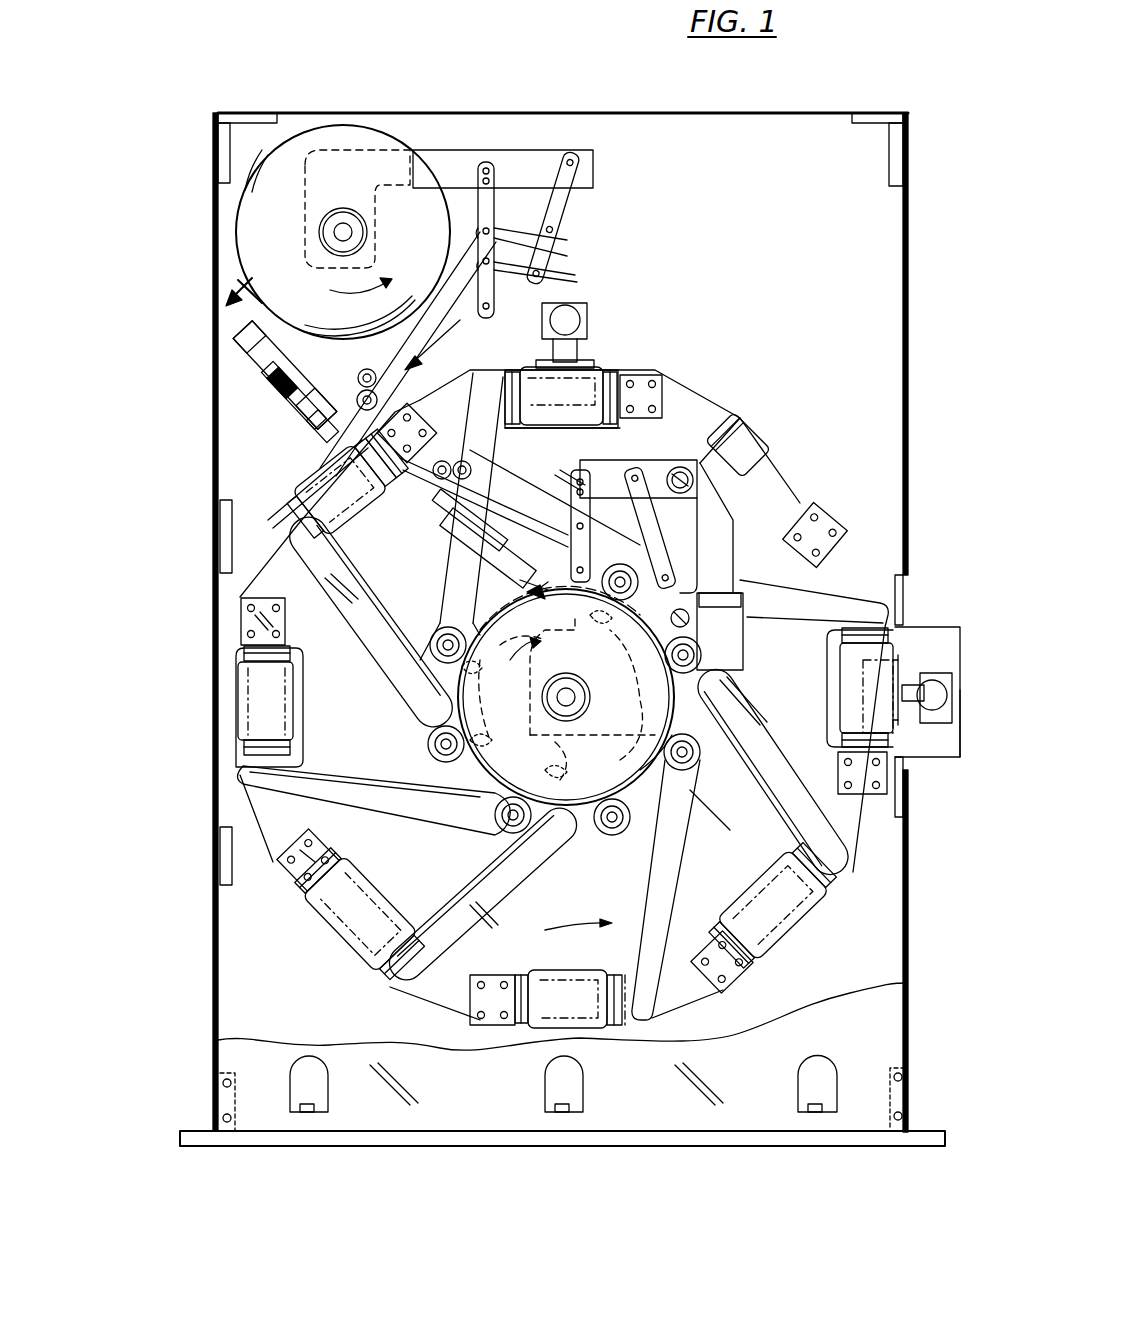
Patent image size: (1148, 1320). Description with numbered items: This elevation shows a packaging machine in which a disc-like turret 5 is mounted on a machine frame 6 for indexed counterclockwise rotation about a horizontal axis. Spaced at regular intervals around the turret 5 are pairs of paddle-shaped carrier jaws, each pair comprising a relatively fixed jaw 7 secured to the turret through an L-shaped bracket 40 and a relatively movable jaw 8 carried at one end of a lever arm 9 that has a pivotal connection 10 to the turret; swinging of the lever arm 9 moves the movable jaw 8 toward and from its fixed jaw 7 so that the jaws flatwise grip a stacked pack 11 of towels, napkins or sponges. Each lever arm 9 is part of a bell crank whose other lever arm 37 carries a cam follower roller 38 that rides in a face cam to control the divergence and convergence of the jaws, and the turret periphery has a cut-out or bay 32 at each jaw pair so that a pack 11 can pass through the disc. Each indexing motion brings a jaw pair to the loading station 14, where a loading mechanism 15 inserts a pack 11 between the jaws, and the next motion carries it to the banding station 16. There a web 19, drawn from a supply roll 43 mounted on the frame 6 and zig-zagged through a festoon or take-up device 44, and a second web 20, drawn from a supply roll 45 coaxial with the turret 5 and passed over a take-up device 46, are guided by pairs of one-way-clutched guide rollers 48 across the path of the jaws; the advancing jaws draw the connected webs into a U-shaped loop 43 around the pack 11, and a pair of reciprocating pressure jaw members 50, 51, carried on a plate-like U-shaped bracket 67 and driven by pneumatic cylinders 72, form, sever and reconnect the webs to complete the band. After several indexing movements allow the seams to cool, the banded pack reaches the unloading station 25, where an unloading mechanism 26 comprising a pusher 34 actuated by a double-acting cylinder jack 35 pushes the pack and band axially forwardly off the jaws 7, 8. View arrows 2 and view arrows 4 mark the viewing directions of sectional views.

The section line 2- 2 is at (545, 62).
The section line 4- 4 is at (550, 582).
The turret 5 is at (732, 393).
The machine frame 6 is at (908, 266).
The fixed jaw 7 is at (242, 652).
The movable jaw 8 is at (752, 442).
The lever arm 9 is at (415, 725).
The pivotal connection 10 is at (447, 645).
The pack 11 is at (598, 428).
The loading station 14 is at (610, 358).
The loading mechanism 15 is at (575, 320).
The banding station 16 is at (322, 436).
The web 19 is at (438, 327).
The web 20 is at (538, 468).
The unloading station 25 is at (905, 633).
The unloading mechanism 26 is at (958, 735).
The cut-out or bay 32 is at (560, 428).
The pusher 34 is at (863, 703).
The double-acting cylinder jack 35 is at (942, 688).
The lever arm 37 is at (511, 828).
The cam follower roller 38 is at (545, 743).
The L-shaped bracket 40 is at (288, 628).
The supply roll 43 is at (362, 126).
The festoon or take-up device 44 is at (578, 217).
The supply roll 45 is at (652, 772).
The festoon or take-up device 46 is at (690, 540).
The guide rollers 48 is at (368, 372).
The pressure jaw member 50 is at (355, 398).
The pressure jaw member 51 is at (470, 482).
The U-shaped bracket 67 is at (280, 378).
The cylinder 72 is at (266, 355).